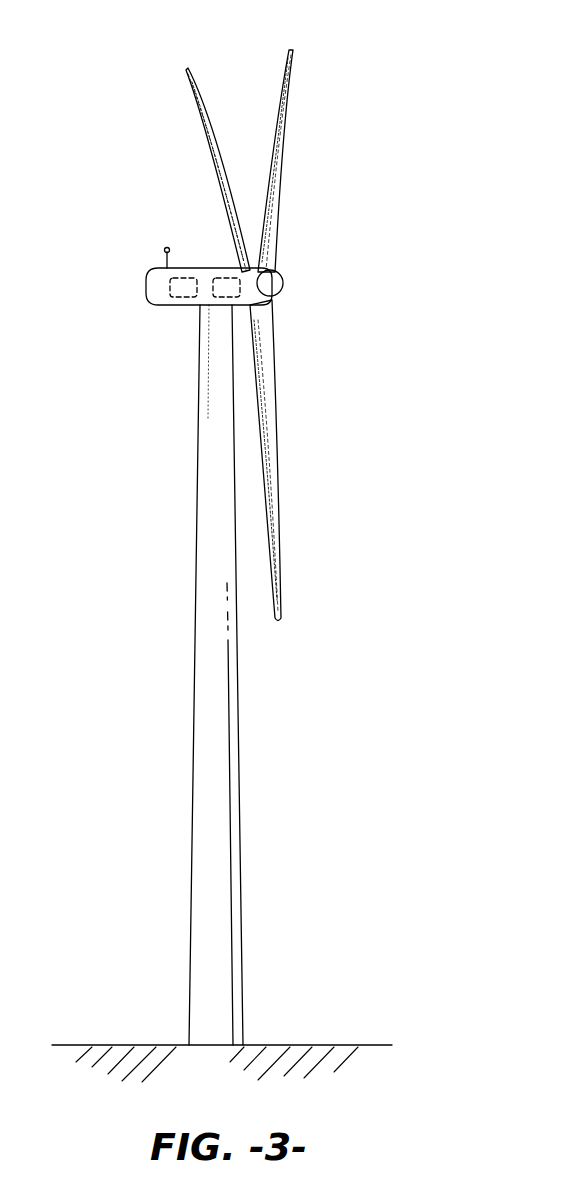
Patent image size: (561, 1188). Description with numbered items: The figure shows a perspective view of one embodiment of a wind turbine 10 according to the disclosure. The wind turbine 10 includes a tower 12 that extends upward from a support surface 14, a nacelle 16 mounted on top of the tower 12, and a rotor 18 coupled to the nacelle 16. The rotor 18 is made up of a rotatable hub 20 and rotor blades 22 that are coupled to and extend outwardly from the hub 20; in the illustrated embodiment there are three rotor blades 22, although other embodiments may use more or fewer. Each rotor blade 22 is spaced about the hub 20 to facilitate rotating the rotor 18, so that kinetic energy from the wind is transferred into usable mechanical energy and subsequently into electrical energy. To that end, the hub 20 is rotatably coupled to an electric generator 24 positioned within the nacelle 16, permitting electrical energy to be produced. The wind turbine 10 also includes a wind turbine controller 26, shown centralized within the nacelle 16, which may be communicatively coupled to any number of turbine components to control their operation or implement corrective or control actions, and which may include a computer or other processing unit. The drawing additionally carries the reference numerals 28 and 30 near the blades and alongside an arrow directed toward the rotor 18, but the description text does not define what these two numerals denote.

The wind turbine 10 is at (390, 120).
The tower 12 is at (200, 778).
The support surface 14 is at (125, 1044).
The nacelle 16 is at (178, 307).
The rotor 18 is at (286, 262).
The rotatable hub 20 is at (283, 291).
The rotor blade 22 is at (214, 122).
The electric generator 24 is at (228, 268).
The wind turbine controller 26 is at (183, 287).
The blade root / pitch system 28 is at (222, 200).
The wind direction 30 is at (352, 284).